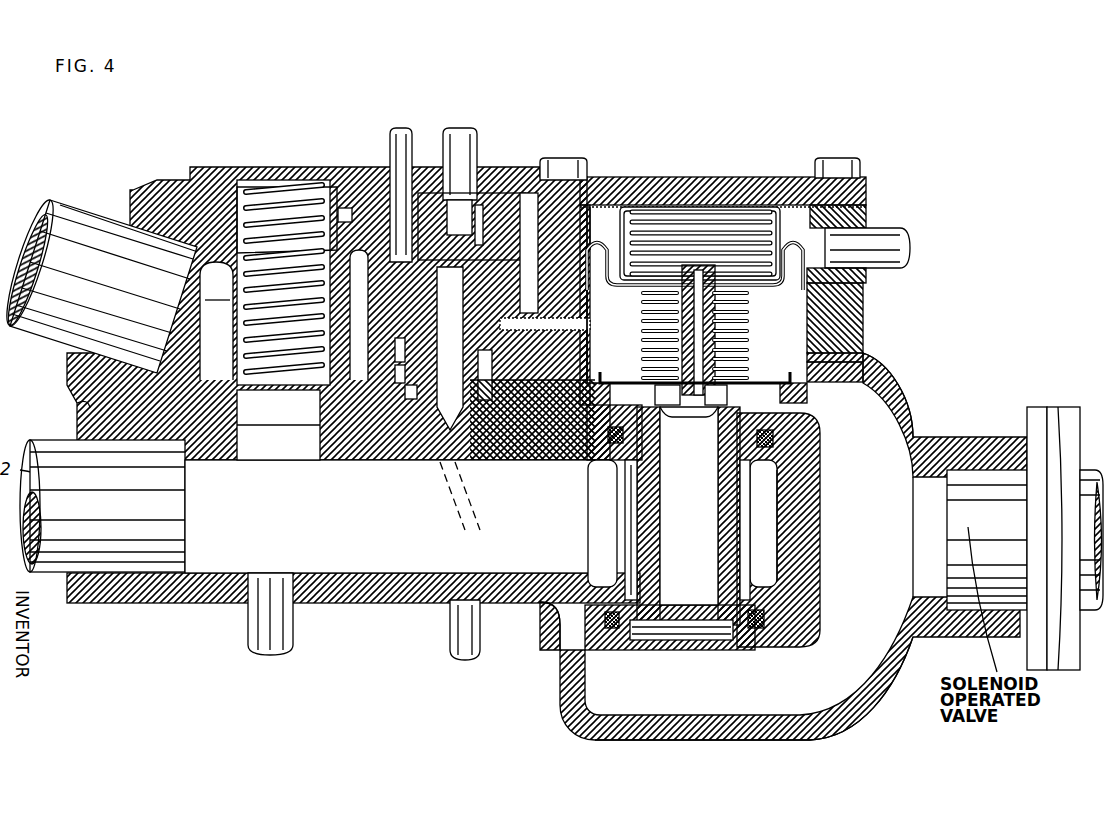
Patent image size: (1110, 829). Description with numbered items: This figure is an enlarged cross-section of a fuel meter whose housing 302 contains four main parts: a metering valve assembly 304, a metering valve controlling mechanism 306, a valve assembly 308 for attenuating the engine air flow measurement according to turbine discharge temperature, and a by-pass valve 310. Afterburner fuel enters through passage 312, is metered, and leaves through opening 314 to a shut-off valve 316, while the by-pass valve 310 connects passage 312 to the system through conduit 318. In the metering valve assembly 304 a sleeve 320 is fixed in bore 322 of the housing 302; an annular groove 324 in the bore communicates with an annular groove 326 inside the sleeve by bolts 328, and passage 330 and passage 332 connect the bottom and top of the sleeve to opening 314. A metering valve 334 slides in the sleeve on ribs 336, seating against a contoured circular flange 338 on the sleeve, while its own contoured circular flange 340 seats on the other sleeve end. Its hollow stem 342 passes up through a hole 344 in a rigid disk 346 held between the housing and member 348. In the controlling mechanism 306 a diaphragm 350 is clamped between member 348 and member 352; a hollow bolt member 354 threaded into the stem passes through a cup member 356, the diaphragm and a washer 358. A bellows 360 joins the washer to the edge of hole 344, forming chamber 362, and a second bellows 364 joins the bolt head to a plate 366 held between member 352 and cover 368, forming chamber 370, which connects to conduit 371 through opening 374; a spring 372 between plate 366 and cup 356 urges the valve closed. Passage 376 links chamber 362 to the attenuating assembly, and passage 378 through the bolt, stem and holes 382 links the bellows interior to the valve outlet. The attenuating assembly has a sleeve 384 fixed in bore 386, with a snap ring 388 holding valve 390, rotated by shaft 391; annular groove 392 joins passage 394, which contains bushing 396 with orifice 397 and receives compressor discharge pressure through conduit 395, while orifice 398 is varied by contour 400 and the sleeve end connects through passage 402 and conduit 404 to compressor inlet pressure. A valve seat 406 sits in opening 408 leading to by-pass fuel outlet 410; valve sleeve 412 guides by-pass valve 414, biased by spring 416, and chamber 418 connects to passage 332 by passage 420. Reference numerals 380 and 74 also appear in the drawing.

The housing 302 is at (913, 392).
The metering valve assembly 304 is at (557, 620).
The metering valve controlling mechanism 306 is at (755, 322).
The valve assembly for attenuating the measurement of engine air flow 308 is at (494, 175).
The by-pass valve 310 is at (247, 233).
The passage 312 is at (352, 604).
The opening 314 is at (922, 595).
The shut-off valve 316 is at (1032, 513).
The conduit 318 is at (62, 232).
The sleeve 320 is at (807, 414).
The bore 322 is at (775, 442).
The annular groove 324 is at (777, 481).
The annular groove 326 is at (615, 470).
The bolts 328 is at (617, 503).
The passage 330 is at (700, 714).
The passage 332 is at (833, 385).
The metering valve 334 is at (647, 518).
The ribs 336 is at (640, 498).
The contoured circular flange 338 is at (766, 623).
The contoured circular flange 340 is at (660, 414).
The hollow stem 342 is at (737, 353).
The hole 344 is at (737, 370).
The rigid disk 346 is at (784, 386).
The member 348 is at (848, 322).
The diaphragm 350 is at (594, 284).
The member 352 is at (866, 277).
The hollow bolt member 354 is at (678, 383).
The cup member 356 is at (603, 213).
The washer 358 is at (745, 300).
The bellows 360 is at (608, 335).
The chamber 362 is at (795, 342).
The second bellows 364 is at (682, 212).
The plate 366 is at (866, 212).
The cover 368 is at (598, 195).
The chamber 370 is at (635, 175).
The conduit 371 is at (875, 240).
The spring 372 is at (767, 220).
The opening 374 is at (862, 190).
The passage 376 is at (582, 330).
The passage 378 is at (737, 338).
The cylinder wall 380 is at (715, 539).
The holes 382 is at (680, 400).
The sleeve 384 is at (405, 386).
The bore 386 is at (479, 372).
The snap ring 388 is at (478, 224).
The valve 390 is at (455, 175).
The shaft 391 is at (467, 146).
The annular groove 392 is at (398, 373).
The passage 394 is at (387, 172).
The conduit 395 is at (405, 132).
The bushing 396 is at (395, 352).
The orifice 397 is at (383, 287).
The orifice 398 is at (547, 389).
The contour 400 is at (453, 348).
The passage 402 is at (443, 440).
The conduit 404 is at (463, 645).
The valve seat 406 is at (240, 408).
The opening 408 is at (238, 432).
The by-pass fuel outlet 410 is at (80, 398).
The valve sleeve 412 is at (220, 283).
The by-pass valve 414 is at (222, 298).
The spring 416 is at (253, 347).
The chamber 418 is at (273, 210).
The passage 420 is at (547, 413).
The valve port 74 is at (1087, 530).